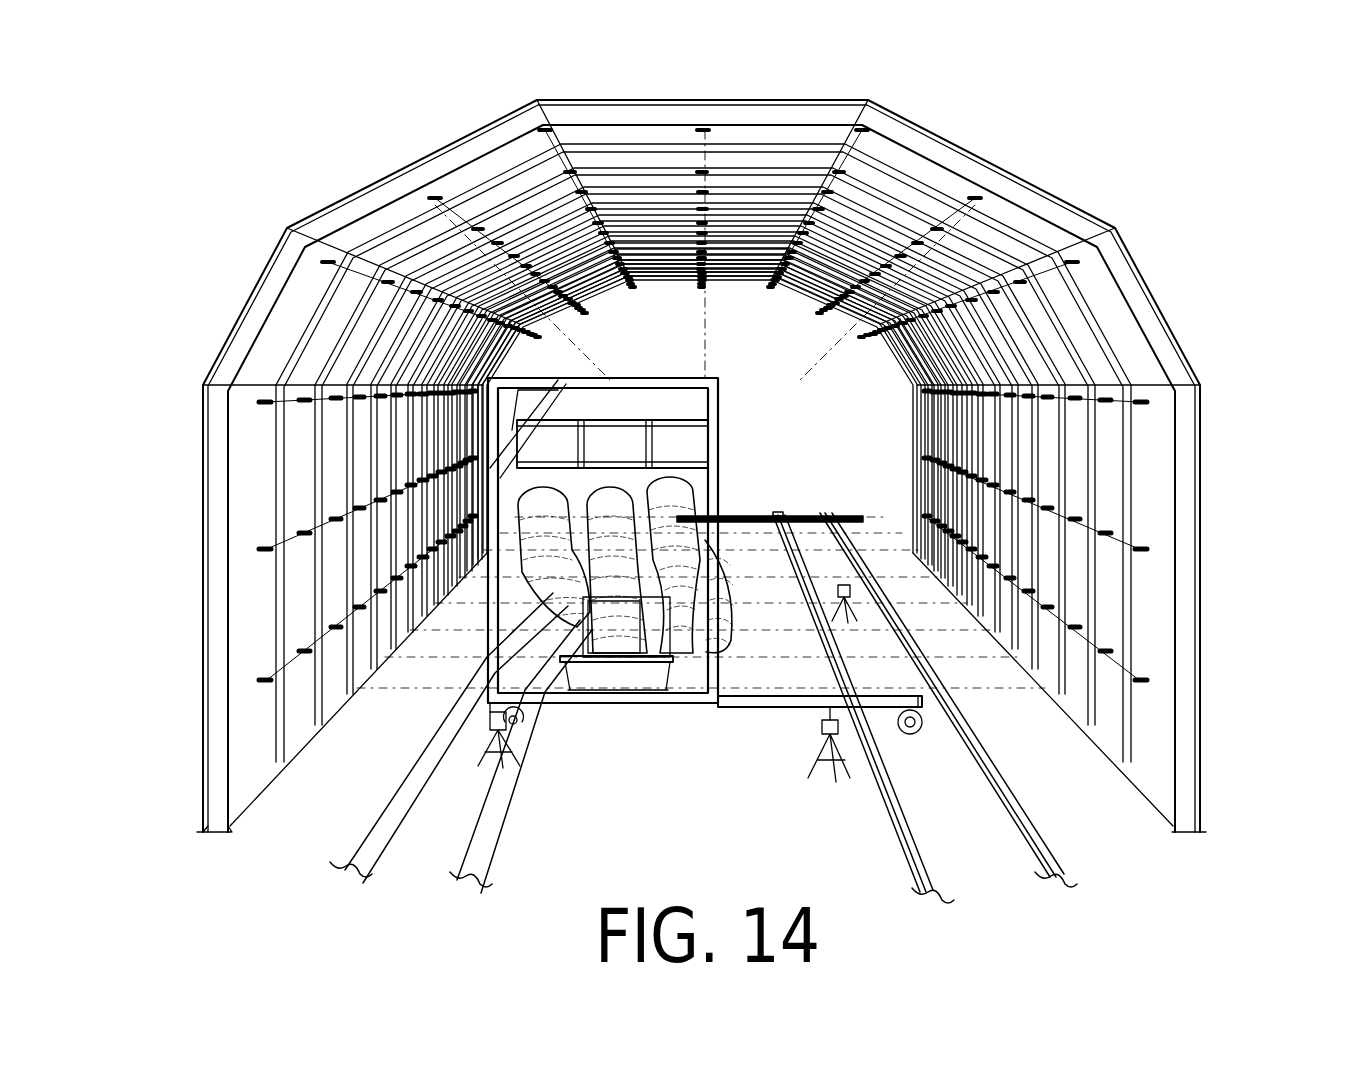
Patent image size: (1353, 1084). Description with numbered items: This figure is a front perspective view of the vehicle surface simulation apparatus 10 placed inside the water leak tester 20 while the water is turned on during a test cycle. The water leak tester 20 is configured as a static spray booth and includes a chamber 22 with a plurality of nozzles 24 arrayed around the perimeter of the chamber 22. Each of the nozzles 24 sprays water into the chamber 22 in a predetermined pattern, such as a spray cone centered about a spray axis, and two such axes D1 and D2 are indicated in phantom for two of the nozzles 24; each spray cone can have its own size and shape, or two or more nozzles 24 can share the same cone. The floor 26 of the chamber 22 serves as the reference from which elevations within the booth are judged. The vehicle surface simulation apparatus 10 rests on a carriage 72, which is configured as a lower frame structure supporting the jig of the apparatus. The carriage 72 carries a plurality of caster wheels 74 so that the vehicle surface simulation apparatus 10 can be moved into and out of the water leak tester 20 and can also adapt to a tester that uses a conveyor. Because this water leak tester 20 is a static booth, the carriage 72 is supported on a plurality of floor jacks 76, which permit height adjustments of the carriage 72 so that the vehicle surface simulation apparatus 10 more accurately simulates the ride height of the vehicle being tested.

The vehicle surface simulation apparatus 10 is at (652, 385).
The water leak tester 20 is at (1046, 104).
The chamber 22 is at (760, 343).
The nozzles 24 is at (543, 128).
The floor 26 is at (680, 817).
The carriage 72 is at (752, 708).
The caster wheels 74 is at (542, 724).
The floor jacks 76 is at (490, 758).
The spray axis D1 is at (412, 688).
The spray axis D2 is at (335, 428).